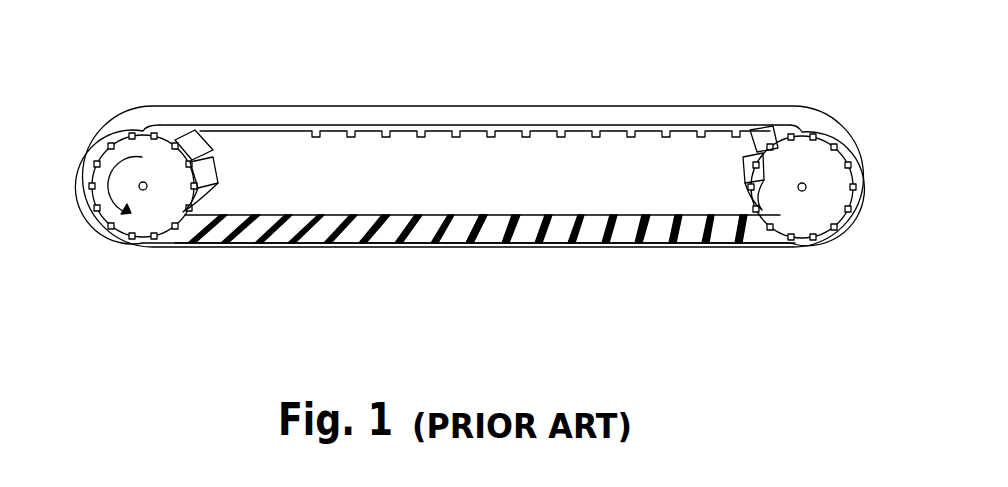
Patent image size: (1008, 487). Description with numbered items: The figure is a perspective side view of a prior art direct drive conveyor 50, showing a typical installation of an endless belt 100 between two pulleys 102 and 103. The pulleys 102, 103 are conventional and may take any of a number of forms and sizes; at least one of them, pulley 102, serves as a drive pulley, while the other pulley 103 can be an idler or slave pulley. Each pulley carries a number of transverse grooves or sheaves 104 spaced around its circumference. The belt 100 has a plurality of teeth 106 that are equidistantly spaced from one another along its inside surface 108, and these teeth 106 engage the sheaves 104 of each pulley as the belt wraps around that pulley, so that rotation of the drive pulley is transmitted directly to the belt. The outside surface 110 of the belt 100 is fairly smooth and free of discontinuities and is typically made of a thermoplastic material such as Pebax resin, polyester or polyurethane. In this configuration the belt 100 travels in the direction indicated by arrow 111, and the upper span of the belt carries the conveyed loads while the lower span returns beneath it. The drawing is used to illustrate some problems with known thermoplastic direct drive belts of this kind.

The direct drive conveyor 50 is at (580, 79).
The endless belt 100 is at (328, 93).
The outside surface 110 is at (395, 115).
The arrow 111 is at (118, 170).
The pulley 102 is at (162, 212).
The pulley 103 is at (780, 203).
The sheaves 104 is at (185, 210).
The teeth 106 is at (377, 215).
The inside surface 108 is at (496, 222).